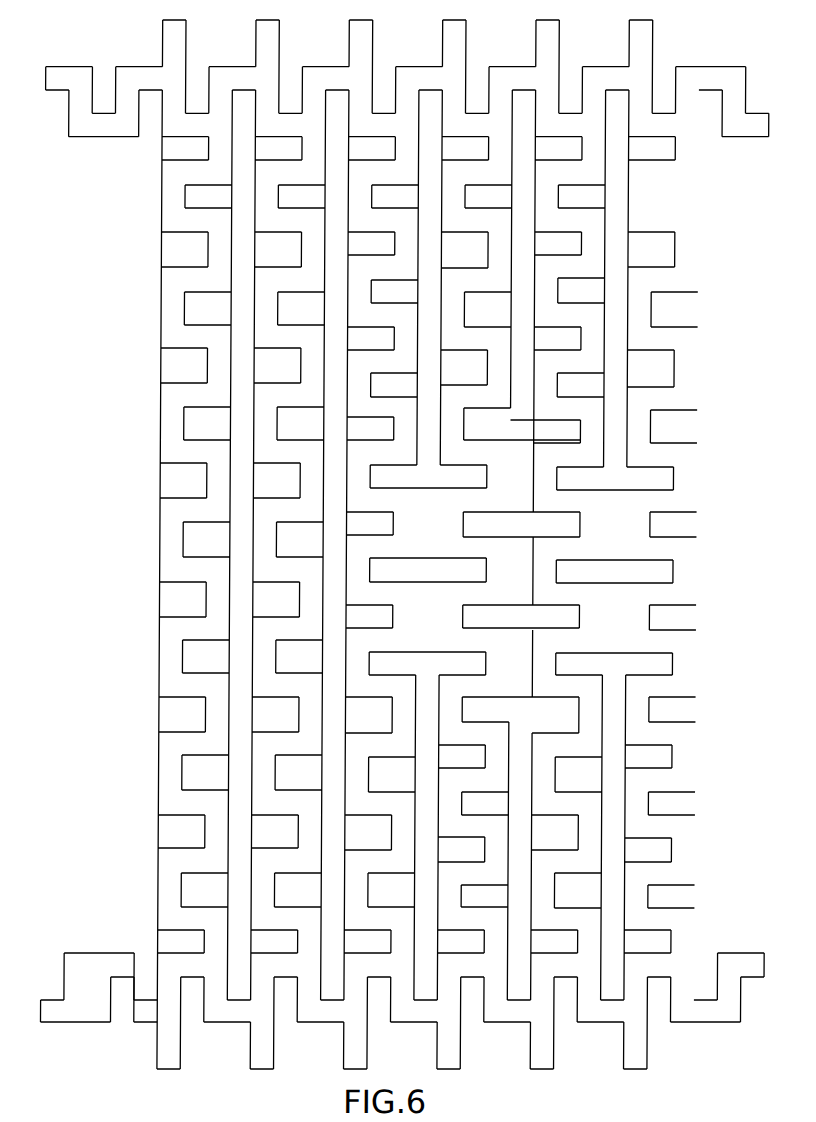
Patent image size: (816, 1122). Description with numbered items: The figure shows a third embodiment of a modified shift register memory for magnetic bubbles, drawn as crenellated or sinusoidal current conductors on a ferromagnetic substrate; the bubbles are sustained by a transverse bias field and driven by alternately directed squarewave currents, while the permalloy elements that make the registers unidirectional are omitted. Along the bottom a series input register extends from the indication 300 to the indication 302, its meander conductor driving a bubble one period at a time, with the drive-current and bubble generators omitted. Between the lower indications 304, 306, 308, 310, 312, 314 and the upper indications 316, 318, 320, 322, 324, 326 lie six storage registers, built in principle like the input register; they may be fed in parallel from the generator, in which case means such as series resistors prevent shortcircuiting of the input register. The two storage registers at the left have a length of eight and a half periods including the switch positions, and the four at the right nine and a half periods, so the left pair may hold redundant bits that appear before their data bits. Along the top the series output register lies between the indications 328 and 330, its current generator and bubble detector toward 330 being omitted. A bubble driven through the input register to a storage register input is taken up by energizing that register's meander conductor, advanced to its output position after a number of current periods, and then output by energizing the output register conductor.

The input register start indication 300 is at (65, 1023).
The input register end indication 302 is at (757, 980).
The storage register indication 304 is at (166, 1069).
The storage register indication 306 is at (261, 1069).
The storage register indication 308 is at (352, 1069).
The storage register indication 310 is at (448, 1069).
The storage register indication 312 is at (541, 1069).
The storage register indication 314 is at (643, 1069).
The storage register indication 316 is at (161, 22).
The storage register indication 318 is at (255, 22).
The storage register indication 320 is at (348, 22).
The storage register indication 322 is at (441, 22).
The storage register indication 324 is at (535, 22).
The storage register indication 326 is at (628, 22).
The output register start indication 328 is at (63, 66).
The output register end indication 330 is at (757, 112).